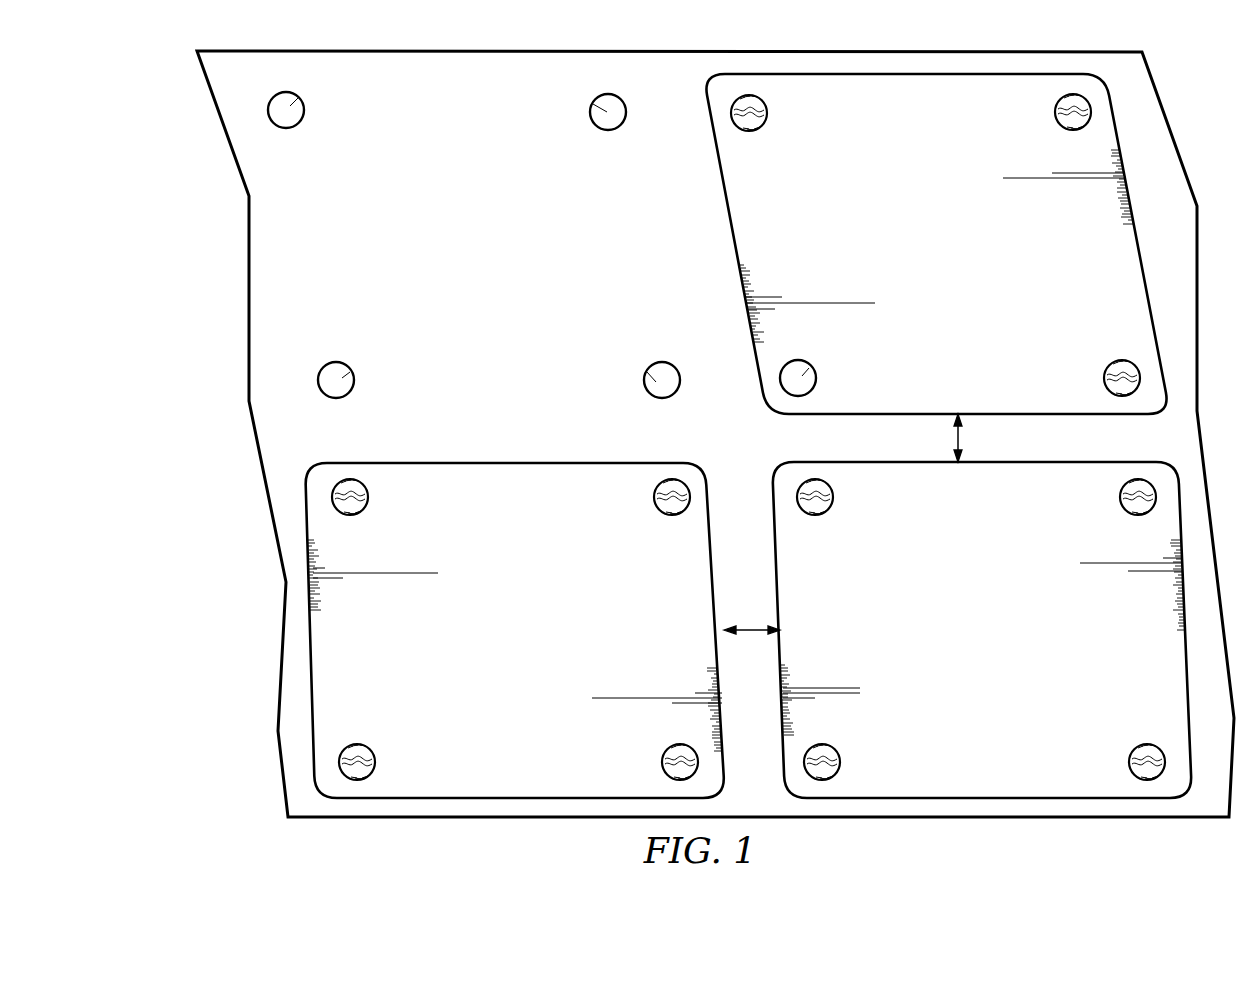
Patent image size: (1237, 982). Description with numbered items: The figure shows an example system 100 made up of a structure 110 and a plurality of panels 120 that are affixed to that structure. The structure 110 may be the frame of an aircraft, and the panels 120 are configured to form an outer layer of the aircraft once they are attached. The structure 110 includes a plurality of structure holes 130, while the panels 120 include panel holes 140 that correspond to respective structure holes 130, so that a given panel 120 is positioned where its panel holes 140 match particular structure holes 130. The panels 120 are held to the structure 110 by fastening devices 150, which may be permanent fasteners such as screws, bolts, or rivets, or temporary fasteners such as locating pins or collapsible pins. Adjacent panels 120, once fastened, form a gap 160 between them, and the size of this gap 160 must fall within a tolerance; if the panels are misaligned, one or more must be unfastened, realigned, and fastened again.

The system 100 is at (349, 19).
The structure 110 is at (267, 163).
The panels 120 is at (921, 251).
The structure holes 130 is at (298, 98).
The panel holes 140 is at (809, 362).
The fastening devices 150 is at (767, 113).
The gap 160 is at (962, 433).